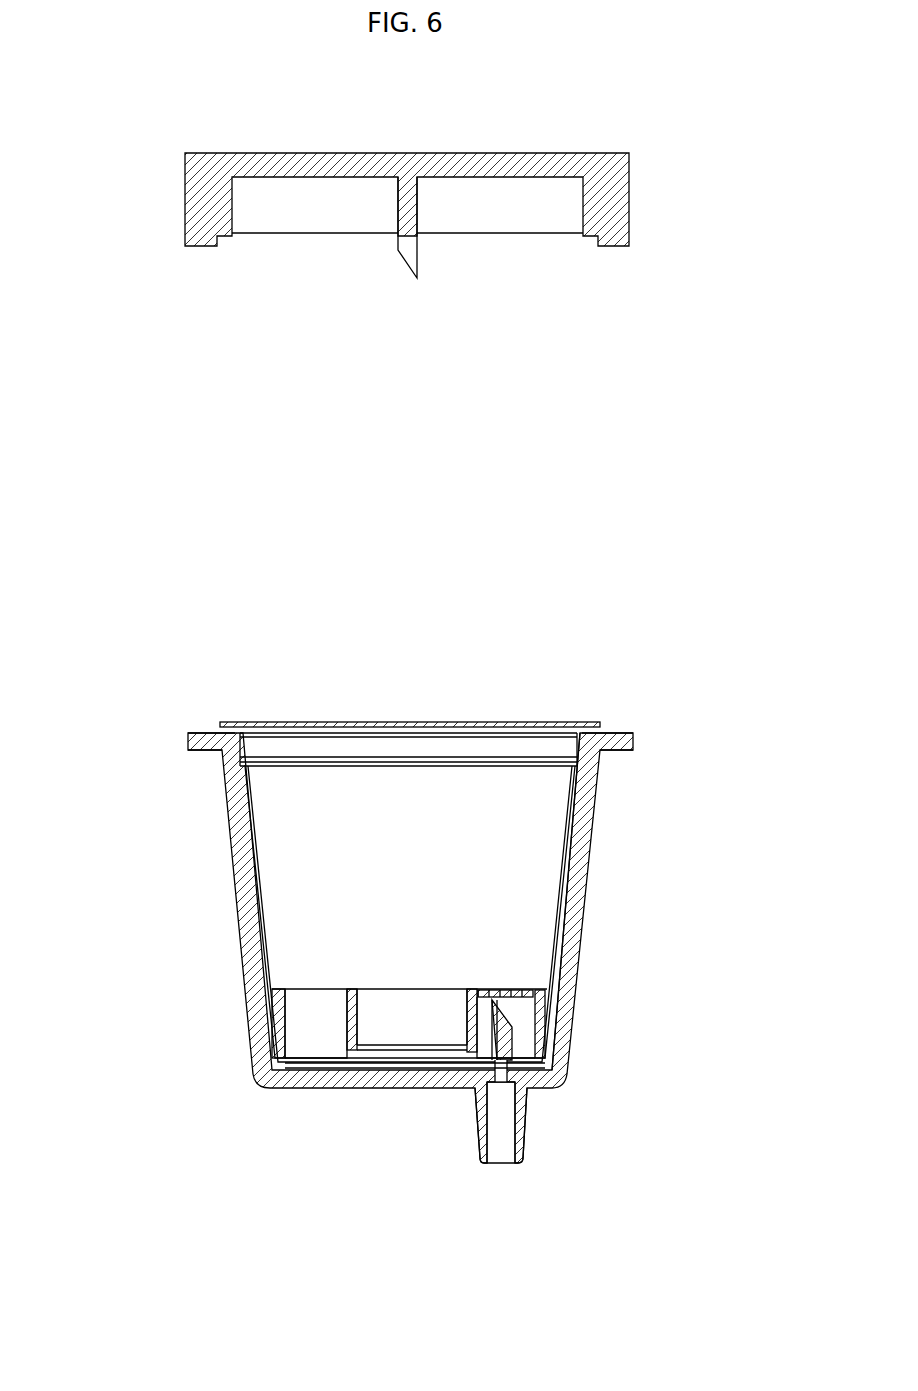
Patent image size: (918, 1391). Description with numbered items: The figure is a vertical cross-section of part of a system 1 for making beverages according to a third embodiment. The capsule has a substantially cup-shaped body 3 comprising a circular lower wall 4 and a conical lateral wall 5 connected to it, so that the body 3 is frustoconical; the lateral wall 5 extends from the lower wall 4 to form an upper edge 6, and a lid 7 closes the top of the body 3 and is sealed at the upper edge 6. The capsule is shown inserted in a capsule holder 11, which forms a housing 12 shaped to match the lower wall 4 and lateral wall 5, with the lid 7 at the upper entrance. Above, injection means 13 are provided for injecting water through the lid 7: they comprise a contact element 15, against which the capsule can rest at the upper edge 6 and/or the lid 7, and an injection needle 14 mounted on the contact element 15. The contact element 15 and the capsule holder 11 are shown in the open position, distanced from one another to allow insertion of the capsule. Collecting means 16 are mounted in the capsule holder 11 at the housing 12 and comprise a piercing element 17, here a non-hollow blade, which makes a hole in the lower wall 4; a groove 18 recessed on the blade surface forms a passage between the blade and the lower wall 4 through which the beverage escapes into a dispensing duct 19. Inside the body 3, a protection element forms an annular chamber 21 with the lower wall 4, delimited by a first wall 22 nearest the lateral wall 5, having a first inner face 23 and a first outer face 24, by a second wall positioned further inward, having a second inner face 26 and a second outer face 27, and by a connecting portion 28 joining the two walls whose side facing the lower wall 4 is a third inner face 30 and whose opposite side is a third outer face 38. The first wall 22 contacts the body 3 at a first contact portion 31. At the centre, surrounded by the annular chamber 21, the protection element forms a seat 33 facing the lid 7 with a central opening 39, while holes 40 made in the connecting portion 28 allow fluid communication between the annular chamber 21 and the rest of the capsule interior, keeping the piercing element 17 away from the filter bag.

The system for making beverages 1 is at (660, 398).
The cup-shaped body 3 is at (516, 815).
The lower wall 4 is at (448, 1050).
The lateral wall 5 is at (262, 995).
The upper edge 6 is at (594, 725).
The lid 7 is at (310, 722).
The capsule holder 11 is at (575, 839).
The housing 12 is at (248, 822).
The injection means 13 is at (387, 191).
The injection needle 14 is at (403, 257).
The contact element 15 is at (512, 163).
The collecting means 16 is at (520, 1092).
The piercing element 17 is at (503, 1016).
The groove 18 is at (493, 1003).
The dispensing duct 19 is at (500, 1125).
The annular chamber 21 is at (312, 1037).
The first wall 22 is at (544, 1033).
The first inner face 23 is at (288, 1033).
The first outer face 24 is at (263, 998).
The second inner face 26 is at (335, 1028).
The second outer face 27 is at (363, 1017).
The connecting portion 28 is at (525, 984).
The third inner face 30 is at (305, 998).
The first contact portion 31 is at (273, 1063).
The seat 33 is at (408, 1043).
The third outer face 38 is at (438, 978).
The central opening 39 is at (413, 1045).
The holes 40 is at (297, 977).